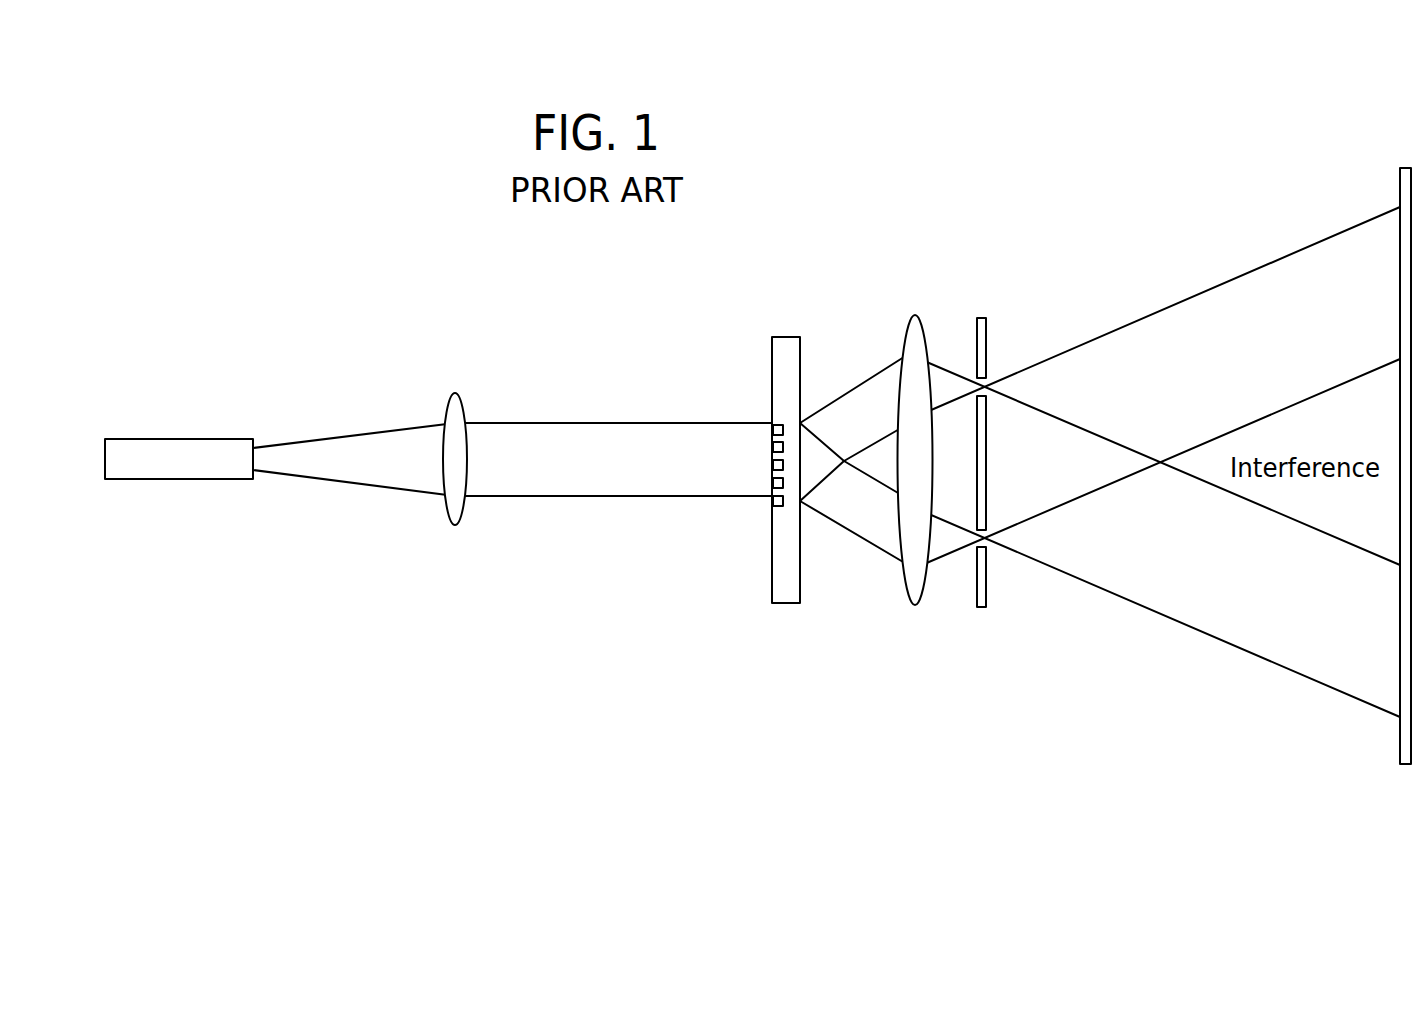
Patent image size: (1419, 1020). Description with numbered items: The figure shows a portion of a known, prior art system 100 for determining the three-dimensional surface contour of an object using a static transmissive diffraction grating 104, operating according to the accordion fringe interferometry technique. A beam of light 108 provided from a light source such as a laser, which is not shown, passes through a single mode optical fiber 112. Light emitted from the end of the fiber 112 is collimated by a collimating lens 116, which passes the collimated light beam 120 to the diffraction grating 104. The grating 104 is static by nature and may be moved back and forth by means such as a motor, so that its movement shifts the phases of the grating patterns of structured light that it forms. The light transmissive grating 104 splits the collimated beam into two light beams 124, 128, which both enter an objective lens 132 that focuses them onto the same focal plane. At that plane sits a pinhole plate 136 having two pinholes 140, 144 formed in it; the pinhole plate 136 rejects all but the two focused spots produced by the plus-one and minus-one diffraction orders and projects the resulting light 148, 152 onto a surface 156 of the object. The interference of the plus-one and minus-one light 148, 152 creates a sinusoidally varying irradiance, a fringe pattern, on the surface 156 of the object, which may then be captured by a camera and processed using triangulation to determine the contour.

The prior art system 100 is at (416, 238).
The static transmissive 2D diffraction grating 104 is at (770, 348).
The beam of light 108 is at (330, 437).
The optical fiber 112 is at (152, 447).
The collimating lens 116 is at (448, 510).
The collimated light beam 120 is at (573, 423).
The light beam 124 is at (851, 391).
The light beam 128 is at (848, 530).
The objective lens 132 is at (910, 603).
The pinhole plate 136 is at (988, 334).
The pinhole 140 is at (990, 395).
The pinhole 144 is at (990, 547).
The resulting light 148 is at (1169, 307).
The resulting light 152 is at (1260, 657).
The surface of the object 156 is at (1400, 187).